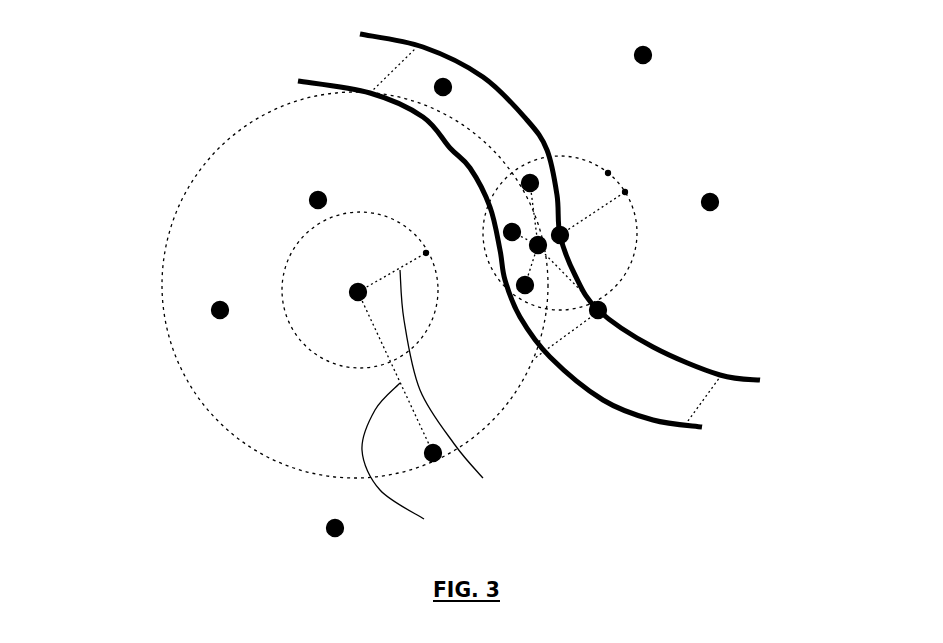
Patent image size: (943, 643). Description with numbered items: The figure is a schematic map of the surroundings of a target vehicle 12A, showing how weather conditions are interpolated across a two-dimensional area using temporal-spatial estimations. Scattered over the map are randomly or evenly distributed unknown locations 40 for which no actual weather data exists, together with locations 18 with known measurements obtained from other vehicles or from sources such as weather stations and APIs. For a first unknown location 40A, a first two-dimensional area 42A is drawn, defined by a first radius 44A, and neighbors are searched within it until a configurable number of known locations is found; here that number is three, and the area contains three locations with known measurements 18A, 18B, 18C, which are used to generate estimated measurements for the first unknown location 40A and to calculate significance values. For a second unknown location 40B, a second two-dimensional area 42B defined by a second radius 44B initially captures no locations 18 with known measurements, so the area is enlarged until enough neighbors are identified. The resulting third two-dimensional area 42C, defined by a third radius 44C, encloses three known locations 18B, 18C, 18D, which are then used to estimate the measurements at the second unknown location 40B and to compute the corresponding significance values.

The target vehicle 12A is at (543, 247).
The locations with known measurements 18 is at (598, 310).
The location with known measurements 18A is at (530, 183).
The location with known measurements 18B is at (512, 232).
The location with known measurements 18C is at (525, 285).
The location with known measurements 18D is at (210, 317).
The unknown locations 40 is at (443, 87).
The first unknown location 40A is at (563, 234).
The second unknown location 40B is at (358, 292).
The first two-dimensional area 42A is at (608, 173).
The second two-dimensional area 42B is at (292, 332).
The third two-dimensional area 42C is at (242, 130).
The first radius 44A is at (600, 217).
The second radius 44B is at (444, 384).
The third radius 44C is at (419, 459).